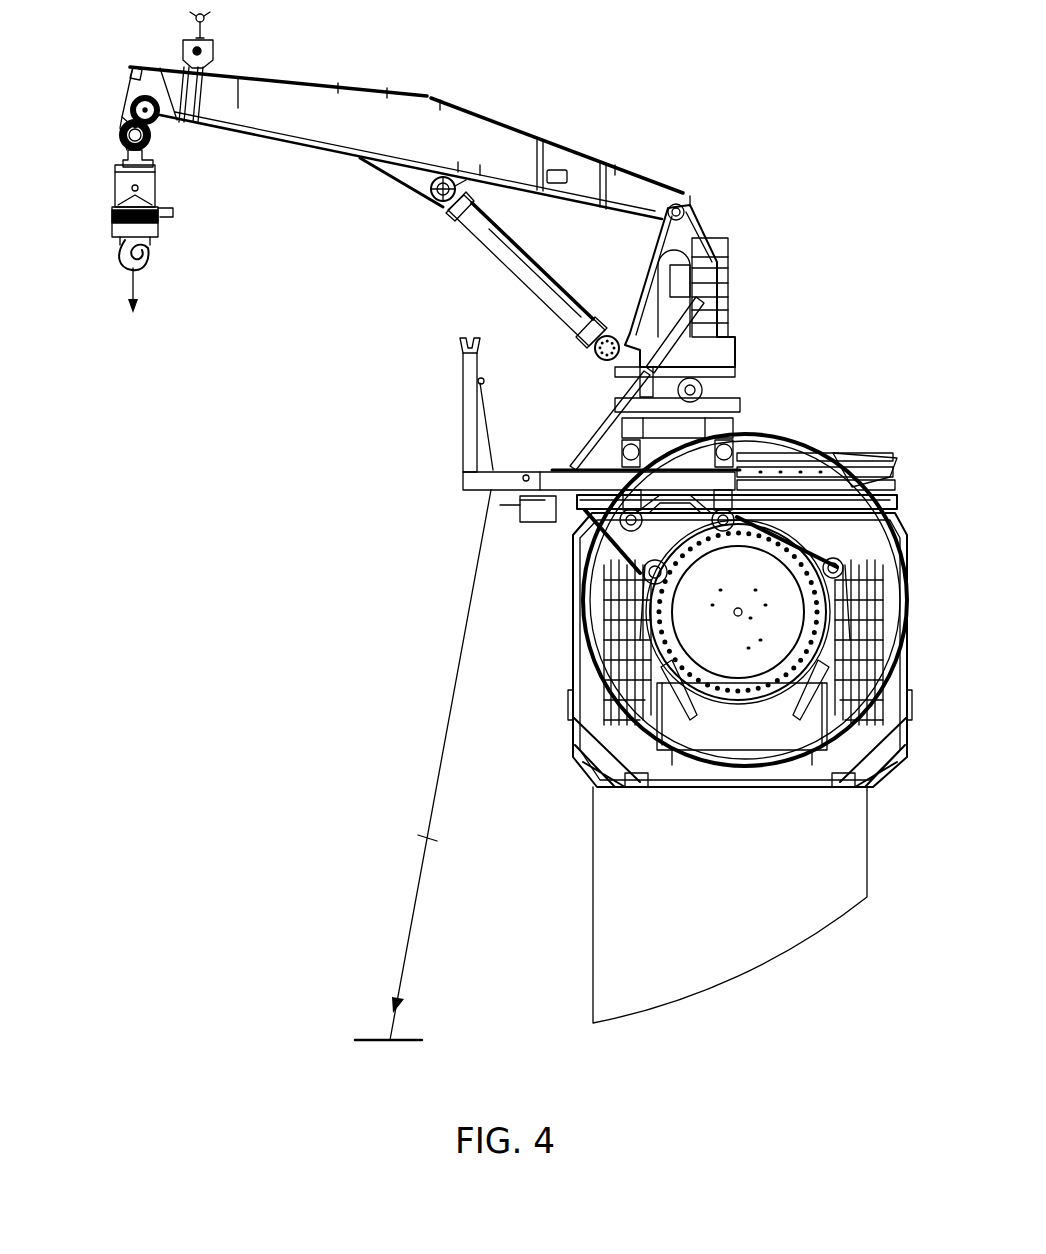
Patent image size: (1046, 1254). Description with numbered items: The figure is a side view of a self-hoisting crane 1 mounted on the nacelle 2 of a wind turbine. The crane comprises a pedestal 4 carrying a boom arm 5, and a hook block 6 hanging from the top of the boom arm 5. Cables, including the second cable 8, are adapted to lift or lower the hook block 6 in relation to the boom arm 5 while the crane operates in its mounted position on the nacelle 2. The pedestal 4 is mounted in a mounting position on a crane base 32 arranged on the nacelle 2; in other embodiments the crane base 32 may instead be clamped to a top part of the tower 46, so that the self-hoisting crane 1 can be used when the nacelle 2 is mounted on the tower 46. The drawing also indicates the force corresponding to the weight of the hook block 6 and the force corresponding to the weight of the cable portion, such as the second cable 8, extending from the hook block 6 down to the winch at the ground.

The self-hoisting crane 1 is at (588, 79).
The nacelle 2 is at (896, 574).
The pedestal 4 is at (734, 312).
The boom arm 5 is at (472, 122).
The hook block 6 is at (115, 184).
The second cable 8 is at (436, 788).
The crane base 32 is at (565, 460).
The tower 46 is at (851, 866).